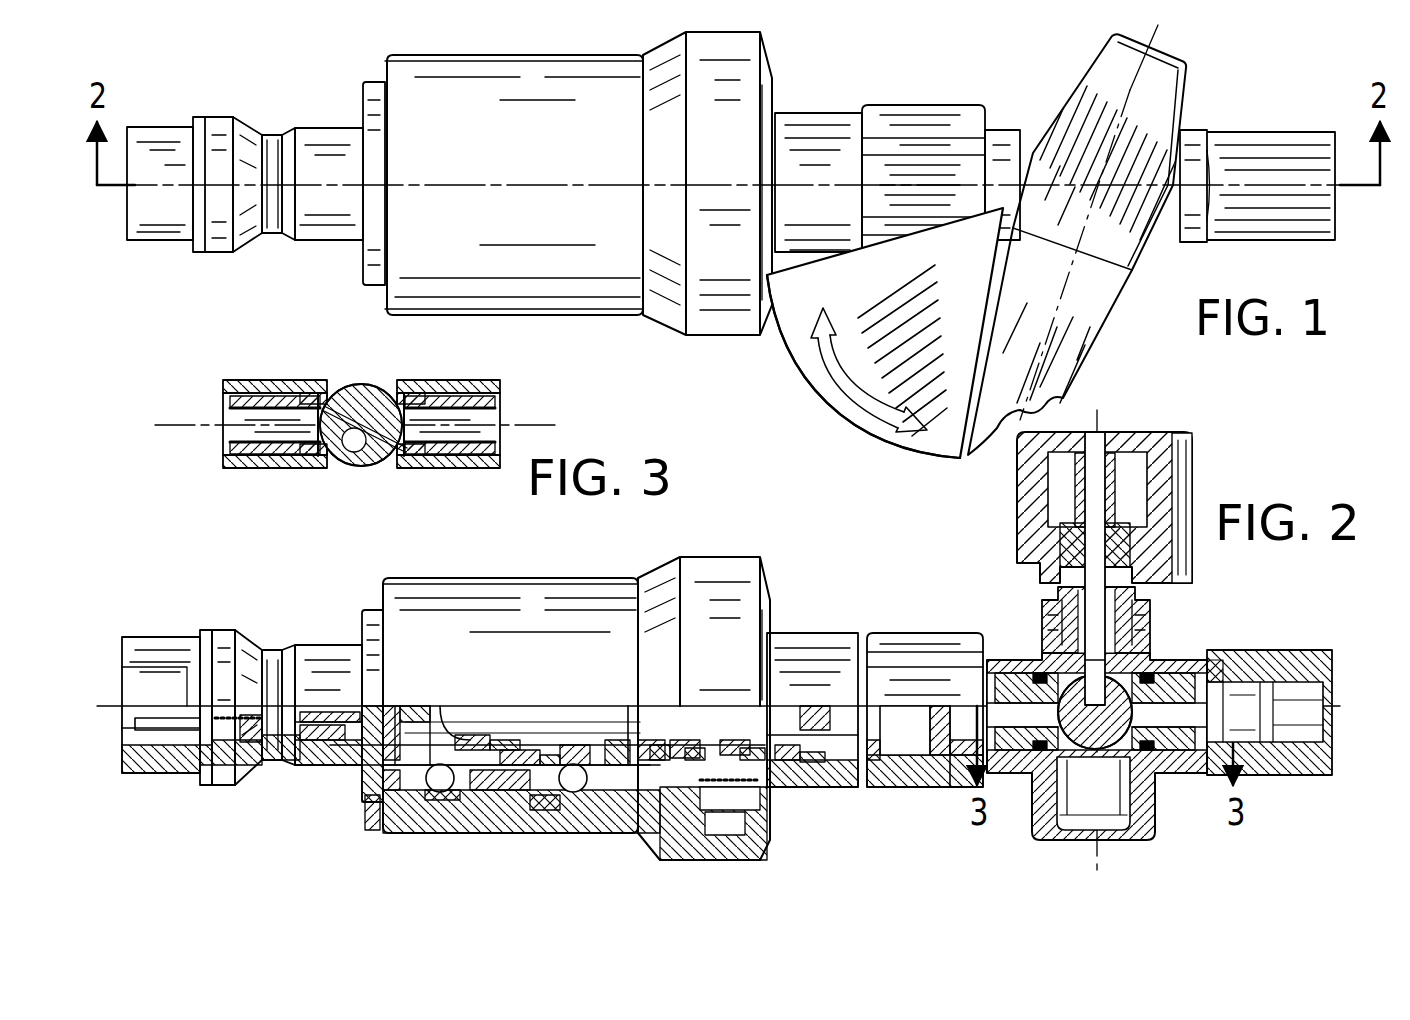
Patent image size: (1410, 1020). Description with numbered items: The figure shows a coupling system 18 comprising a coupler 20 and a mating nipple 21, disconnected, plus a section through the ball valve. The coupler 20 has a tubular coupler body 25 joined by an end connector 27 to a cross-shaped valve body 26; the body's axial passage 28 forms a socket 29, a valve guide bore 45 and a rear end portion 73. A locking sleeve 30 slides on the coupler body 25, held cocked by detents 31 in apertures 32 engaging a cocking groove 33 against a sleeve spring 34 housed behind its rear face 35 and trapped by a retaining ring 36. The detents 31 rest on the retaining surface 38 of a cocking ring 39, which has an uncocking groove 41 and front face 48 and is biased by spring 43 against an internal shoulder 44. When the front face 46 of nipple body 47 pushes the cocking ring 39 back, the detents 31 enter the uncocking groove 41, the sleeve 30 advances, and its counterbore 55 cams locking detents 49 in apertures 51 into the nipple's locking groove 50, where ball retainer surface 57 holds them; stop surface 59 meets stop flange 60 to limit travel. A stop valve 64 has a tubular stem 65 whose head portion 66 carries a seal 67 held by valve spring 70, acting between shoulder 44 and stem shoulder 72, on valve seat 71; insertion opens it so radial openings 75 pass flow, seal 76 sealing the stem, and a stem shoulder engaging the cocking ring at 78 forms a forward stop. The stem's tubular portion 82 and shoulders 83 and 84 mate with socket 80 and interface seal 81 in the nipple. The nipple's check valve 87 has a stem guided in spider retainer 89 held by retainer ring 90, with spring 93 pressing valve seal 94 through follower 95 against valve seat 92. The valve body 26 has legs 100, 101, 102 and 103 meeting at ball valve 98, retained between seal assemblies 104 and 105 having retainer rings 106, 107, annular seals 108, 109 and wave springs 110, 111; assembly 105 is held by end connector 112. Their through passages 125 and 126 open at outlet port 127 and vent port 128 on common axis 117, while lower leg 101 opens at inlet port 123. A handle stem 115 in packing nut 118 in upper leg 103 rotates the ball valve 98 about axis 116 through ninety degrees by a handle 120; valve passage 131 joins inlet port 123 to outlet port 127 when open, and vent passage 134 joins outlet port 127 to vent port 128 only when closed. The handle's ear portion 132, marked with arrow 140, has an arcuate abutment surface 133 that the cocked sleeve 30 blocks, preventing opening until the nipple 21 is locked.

In FIG. 1, the coupling system 18 is at (335, 62).
In FIG. 1, the coupler 20 is at (855, 90).
In FIG. 2, the coupler 20 is at (788, 565).
In FIG. 1, the mating nipple 21 is at (180, 122).
In FIG. 2, the mating nipple 21 is at (162, 615).
In FIG. 1, the coupler body 25 is at (805, 113).
In FIG. 2, the coupler body 25 is at (790, 630).
In FIG. 1, the valve body 26 is at (1180, 243).
In FIG. 2, the valve body 26 is at (1200, 658).
In FIG. 2, the end connector 27 is at (952, 793).
In FIG. 2, the through passage 28 is at (382, 748).
In FIG. 2, the socket 29 is at (395, 702).
In FIG. 1, the locking sleeve 30 is at (525, 55).
In FIG. 2, the locking sleeve 30 is at (547, 711).
In FIG. 2, the detents 31 is at (618, 815).
In FIG. 2, the apertures 32 is at (660, 750).
In FIG. 2, the cocking groove 33 is at (555, 755).
In FIG. 2, the sleeve spring 34 is at (745, 845).
In FIG. 2, the rear face 35 is at (770, 620).
In FIG. 2, the retaining ring 36 is at (763, 800).
In FIG. 2, the retaining surface 38 is at (507, 760).
In FIG. 2, the cocking ring 39 is at (620, 735).
In FIG. 2, the uncocking groove 41 is at (545, 808).
In FIG. 2, the coil spring 43 is at (650, 745).
In FIG. 2, the internal shoulder 44 is at (790, 762).
In FIG. 2, the valve guide bore 45 is at (800, 778).
In FIG. 2, the front face 46 is at (367, 650).
In FIG. 2, the nipple body 47 is at (170, 640).
In FIG. 2, the front face 48 is at (412, 722).
In FIG. 2, the nipple locking detents 49 is at (452, 786).
In FIG. 1, the locking groove 50 is at (272, 233).
In FIG. 2, the apertures 51 is at (500, 790).
In FIG. 2, the counterbore 55 is at (375, 800).
In FIG. 2, the ball retainer surface 57 is at (573, 782).
In FIG. 2, the stop surface 59 is at (440, 782).
In FIG. 2, the stop flange 60 is at (392, 792).
In FIG. 2, the stop valve 64 is at (900, 722).
In FIG. 2, the tubular stem 65 is at (632, 730).
In FIG. 2, the head portion 66 is at (810, 700).
In FIG. 2, the annular seal 67 is at (870, 762).
In FIG. 2, the valve spring 70 is at (680, 745).
In FIG. 2, the annular valve seat 71 is at (845, 765).
In FIG. 2, the shoulder 72 is at (690, 750).
In FIG. 2, the rear end portion 73 is at (960, 765).
In FIG. 2, the radial openings 75 is at (735, 745).
In FIG. 2, the annular seal 76 is at (745, 752).
In FIG. 2, the shoulder engagement 78 is at (545, 762).
In FIG. 2, the socket 80 is at (340, 705).
In FIG. 2, the annular interface seal 81 is at (338, 765).
In FIG. 2, the tubular portion 82 is at (505, 740).
In FIG. 2, the annular shoulder 83 is at (462, 740).
In FIG. 2, the annular shoulder 84 is at (450, 706).
In FIG. 2, the check valve 87 is at (308, 712).
In FIG. 2, the spider retainer 89 is at (160, 722).
In FIG. 2, the retainer ring 90 is at (213, 738).
In FIG. 2, the valve seat 92 is at (290, 752).
In FIG. 2, the coil spring 93 is at (238, 748).
In FIG. 2, the annular valve seal 94 is at (290, 715).
In FIG. 2, the follower 95 is at (272, 750).
In FIG. 3, the ball valve 98 is at (388, 385).
In FIG. 2, the leg 100 is at (1012, 658).
In FIG. 2, the lower leg 101 is at (1160, 805).
In FIG. 2, the leg 102 is at (1165, 742).
In FIG. 2, the upper leg 103 is at (1153, 618).
In FIG. 3, the ball valve seal assembly 104 is at (215, 470).
In FIG. 2, the ball valve seal assembly 104 is at (1030, 742).
In FIG. 3, the ball valve seal assembly 105 is at (505, 380).
In FIG. 2, the ball valve seal assembly 105 is at (1212, 668).
In FIG. 3, the retainer ring 106 is at (230, 405).
In FIG. 3, the retainer ring 107 is at (495, 410).
In FIG. 3, the annular seal 108 is at (318, 465).
In FIG. 3, the annular seal 109 is at (402, 455).
In FIG. 3, the wave spring 110 is at (308, 392).
In FIG. 3, the wave spring 111 is at (415, 462).
In FIG. 2, the end connector 112 is at (1300, 650).
In FIG. 2, the handle stem 115 is at (1112, 495).
In FIG. 2, the rotation axis 116 is at (1100, 428).
In FIG. 2, the common axis 117 is at (1330, 715).
In FIG. 2, the packing nut 118 is at (1130, 545).
In FIG. 1, the handle 120 is at (1185, 98).
In FIG. 2, the handle 120 is at (1192, 445).
In FIG. 2, the inlet port 123 is at (1095, 790).
In FIG. 3, the through passage 125 is at (240, 440).
In FIG. 3, the through passage 126 is at (495, 440).
In FIG. 3, the outlet port 127 is at (322, 395).
In FIG. 3, the vent port 128 is at (420, 392).
In FIG. 3, the valve passage 131 is at (355, 452).
In FIG. 1, the ear portion 132 is at (840, 396).
In FIG. 1, the arcuate abutment surface 133 is at (805, 360).
In FIG. 3, the vent passage 134 is at (350, 400).
In FIG. 1, the direction indicating arrow 140 is at (890, 412).